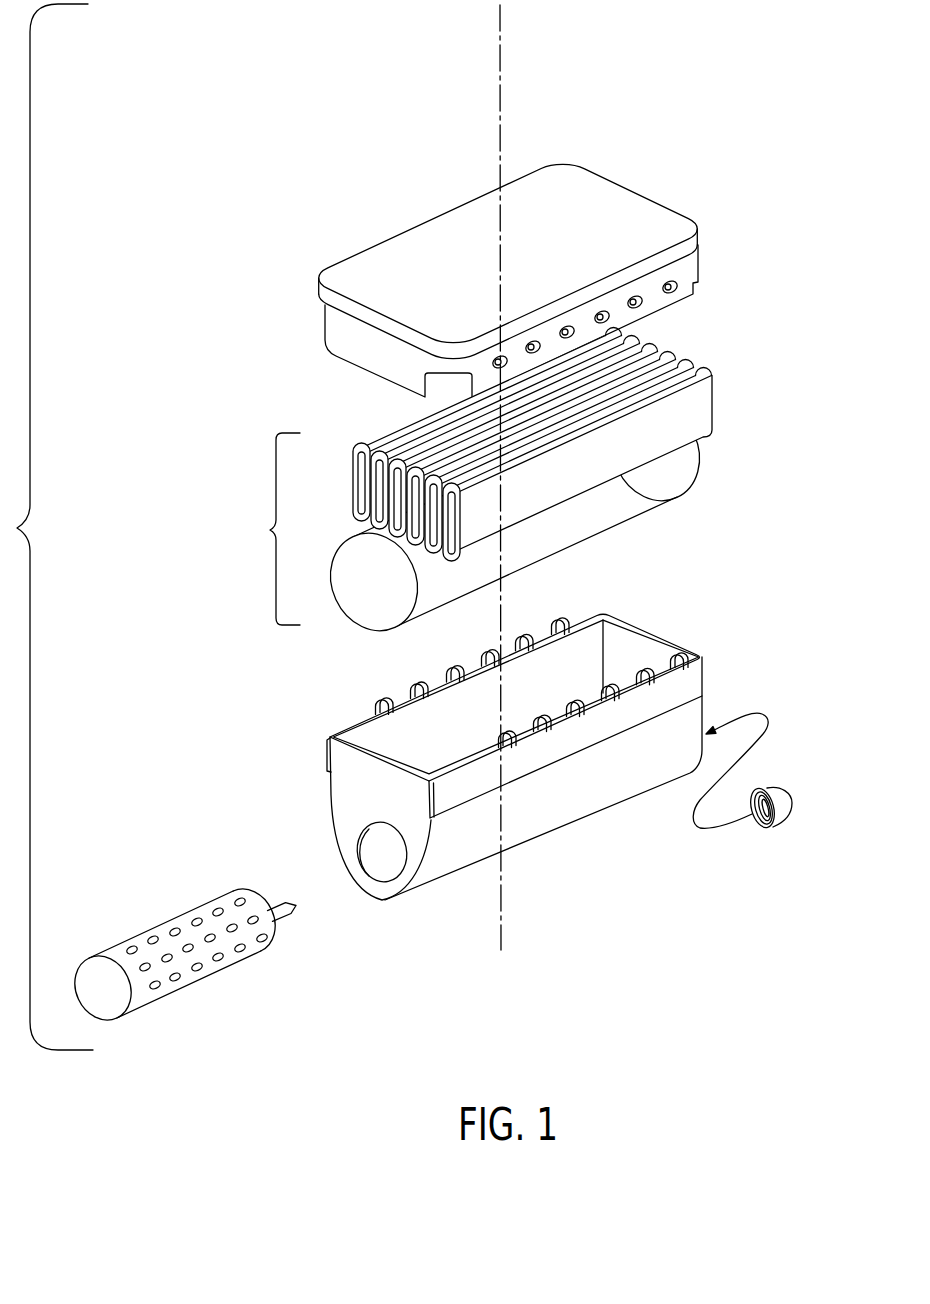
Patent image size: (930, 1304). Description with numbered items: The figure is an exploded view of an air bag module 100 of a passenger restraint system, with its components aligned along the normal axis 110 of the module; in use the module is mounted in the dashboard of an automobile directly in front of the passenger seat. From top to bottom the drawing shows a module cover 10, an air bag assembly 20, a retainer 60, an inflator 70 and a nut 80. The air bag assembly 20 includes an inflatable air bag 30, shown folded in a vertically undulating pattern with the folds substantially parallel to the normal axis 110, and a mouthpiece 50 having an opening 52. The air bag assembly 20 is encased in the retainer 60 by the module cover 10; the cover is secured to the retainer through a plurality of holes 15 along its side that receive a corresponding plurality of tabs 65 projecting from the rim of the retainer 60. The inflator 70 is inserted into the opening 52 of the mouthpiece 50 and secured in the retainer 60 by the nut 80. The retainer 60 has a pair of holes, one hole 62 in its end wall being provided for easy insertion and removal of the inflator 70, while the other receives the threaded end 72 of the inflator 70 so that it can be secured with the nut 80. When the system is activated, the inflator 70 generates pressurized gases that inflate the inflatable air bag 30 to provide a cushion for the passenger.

The air bag module 100 is at (292, 132).
The normal axis 110 is at (500, 61).
The module cover 10 is at (637, 213).
The holes 15 is at (639, 304).
The air bag assembly 20 is at (273, 529).
The inflatable air bag 30 is at (696, 398).
The mouthpiece 50 is at (679, 467).
The opening 52 is at (375, 602).
The retainer 60 is at (687, 718).
The hole 62 is at (383, 882).
The tabs 65 is at (641, 672).
The inflator 70 is at (187, 988).
The threaded end 72 is at (273, 906).
The nut 80 is at (792, 806).